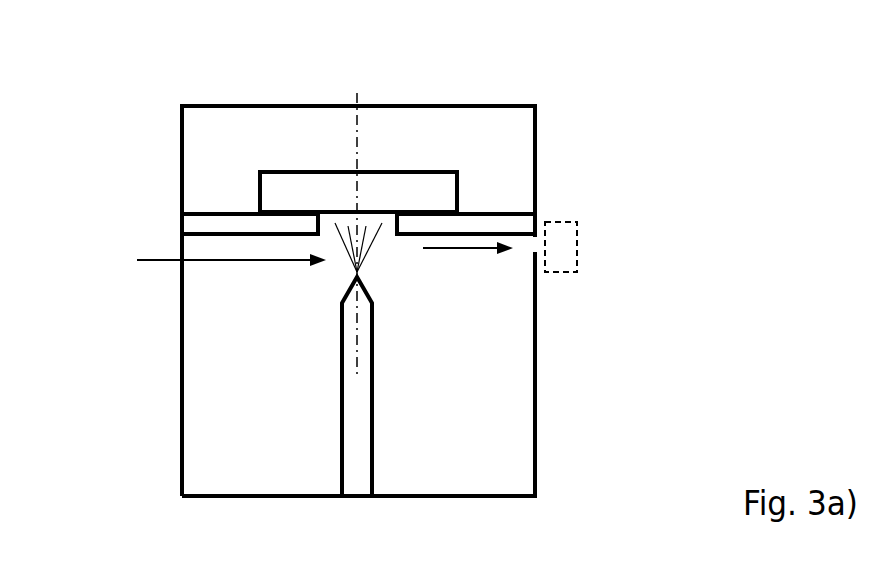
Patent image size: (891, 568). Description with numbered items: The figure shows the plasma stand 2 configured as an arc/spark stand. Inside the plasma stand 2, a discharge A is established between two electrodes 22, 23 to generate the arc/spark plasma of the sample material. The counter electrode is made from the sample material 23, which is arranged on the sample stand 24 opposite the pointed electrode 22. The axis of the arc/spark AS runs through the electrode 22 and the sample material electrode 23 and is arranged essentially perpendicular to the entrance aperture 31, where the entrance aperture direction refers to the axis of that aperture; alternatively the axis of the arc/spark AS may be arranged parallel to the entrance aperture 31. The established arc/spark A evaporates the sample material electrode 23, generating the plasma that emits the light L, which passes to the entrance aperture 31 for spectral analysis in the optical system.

The plasma stand 2 is at (128, 117).
The electrode 22 is at (357, 439).
The sample material electrode 23 is at (280, 197).
The sample stand 24 is at (207, 222).
The entrance aperture 31 is at (560, 253).
The axis of the arc/spark AS is at (360, 212).
The discharge A is at (217, 256).
The light L is at (468, 268).